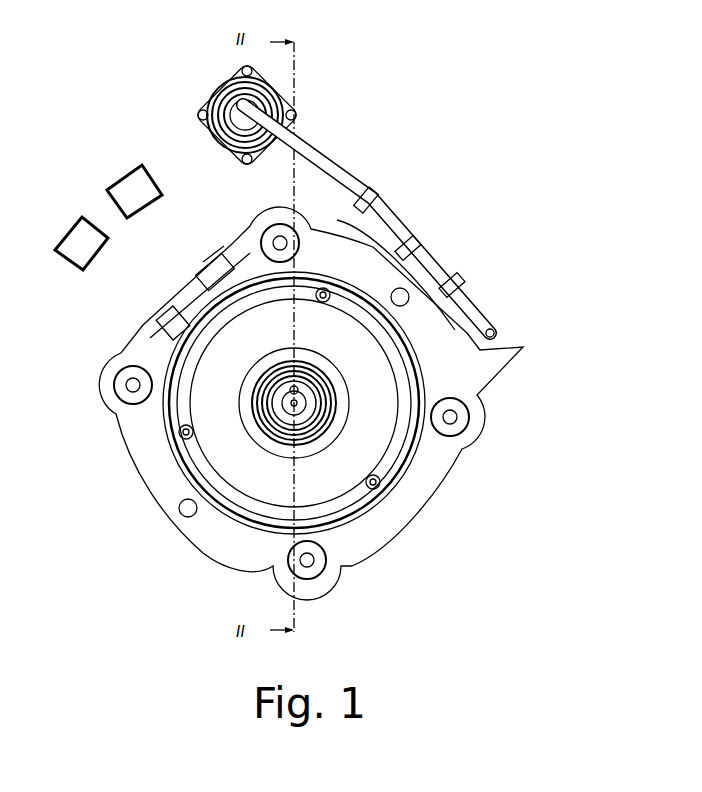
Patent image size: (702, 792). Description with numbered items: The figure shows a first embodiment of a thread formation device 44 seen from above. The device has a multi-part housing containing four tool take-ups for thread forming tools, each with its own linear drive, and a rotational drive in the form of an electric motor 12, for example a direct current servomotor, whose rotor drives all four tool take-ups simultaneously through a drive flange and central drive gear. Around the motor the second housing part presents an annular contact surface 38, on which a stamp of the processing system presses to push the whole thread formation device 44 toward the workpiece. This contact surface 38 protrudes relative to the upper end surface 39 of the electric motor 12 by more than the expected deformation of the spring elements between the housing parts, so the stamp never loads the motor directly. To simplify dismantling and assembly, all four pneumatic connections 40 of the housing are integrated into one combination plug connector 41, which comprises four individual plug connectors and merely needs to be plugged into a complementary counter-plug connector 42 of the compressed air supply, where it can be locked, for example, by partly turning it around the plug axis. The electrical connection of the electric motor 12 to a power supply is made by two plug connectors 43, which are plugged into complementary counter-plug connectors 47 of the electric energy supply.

The electric motor 12 is at (222, 402).
The annular contact surface 38 is at (150, 471).
The upper end surface 39 is at (247, 478).
The pneumatic connections 40 is at (385, 207).
The combination plug connector 41 is at (215, 92).
The counter-plug connector 42 is at (213, 103).
The plug connectors 43 is at (203, 287).
The thread formation device 44 is at (520, 418).
The counter-plug connectors 47 is at (140, 187).